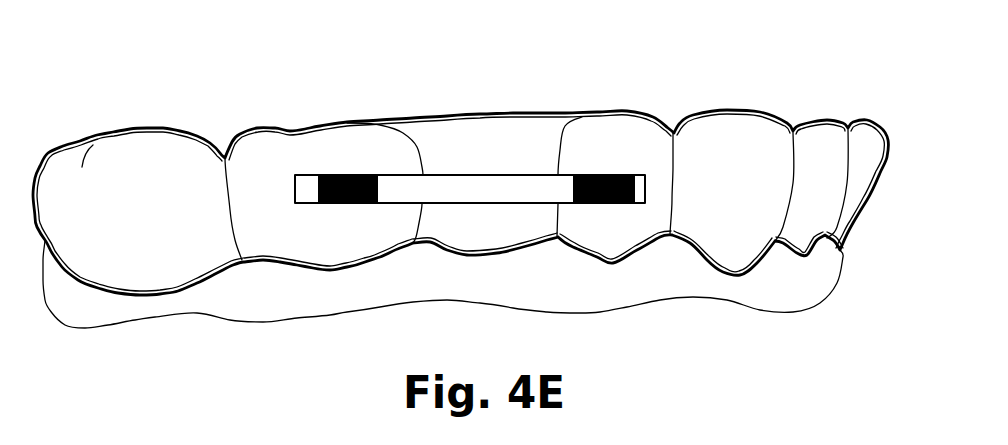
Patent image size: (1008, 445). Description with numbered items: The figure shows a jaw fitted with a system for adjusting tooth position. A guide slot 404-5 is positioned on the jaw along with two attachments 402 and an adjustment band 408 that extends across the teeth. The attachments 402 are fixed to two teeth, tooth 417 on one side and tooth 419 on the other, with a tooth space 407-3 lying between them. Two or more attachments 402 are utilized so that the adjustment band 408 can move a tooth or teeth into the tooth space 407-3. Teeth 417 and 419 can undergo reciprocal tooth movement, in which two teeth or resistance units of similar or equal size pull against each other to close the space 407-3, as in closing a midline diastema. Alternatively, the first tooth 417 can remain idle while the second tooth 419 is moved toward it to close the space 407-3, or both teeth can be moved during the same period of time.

The guide slot 404-5 is at (308, 175).
The tooth space 407-3 is at (496, 92).
The adjustment band 408 is at (533, 173).
The attachments 402 is at (350, 205).
The tooth 417 is at (310, 250).
The tooth 419 is at (648, 220).